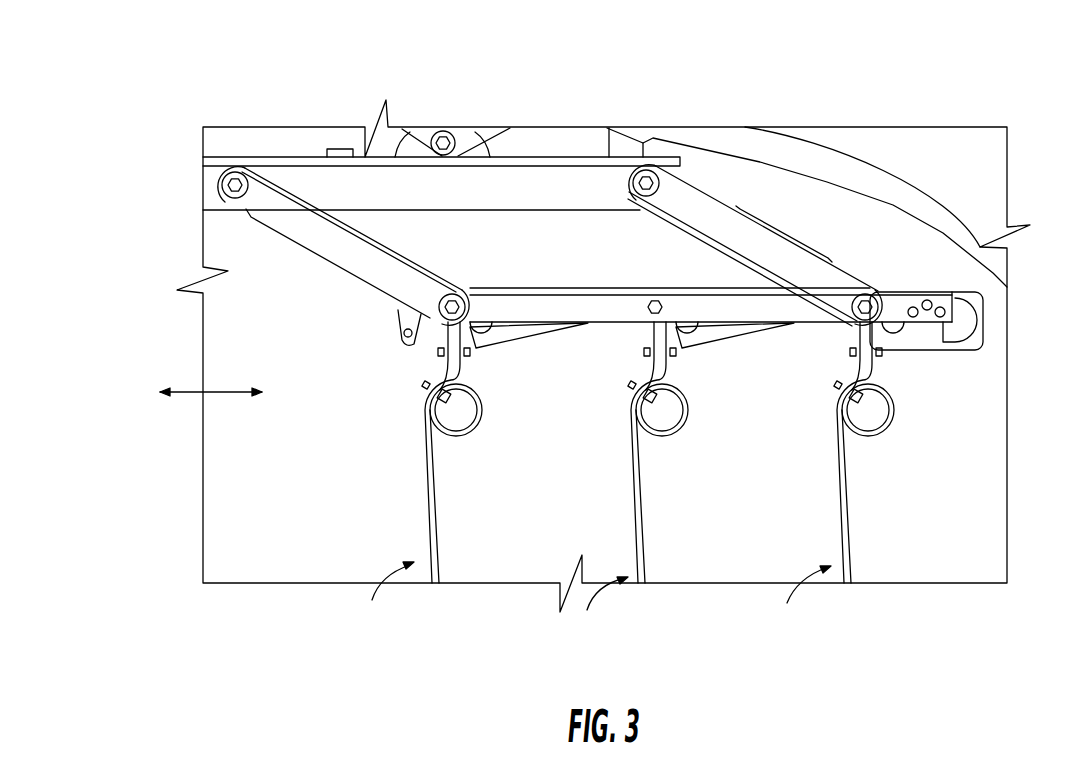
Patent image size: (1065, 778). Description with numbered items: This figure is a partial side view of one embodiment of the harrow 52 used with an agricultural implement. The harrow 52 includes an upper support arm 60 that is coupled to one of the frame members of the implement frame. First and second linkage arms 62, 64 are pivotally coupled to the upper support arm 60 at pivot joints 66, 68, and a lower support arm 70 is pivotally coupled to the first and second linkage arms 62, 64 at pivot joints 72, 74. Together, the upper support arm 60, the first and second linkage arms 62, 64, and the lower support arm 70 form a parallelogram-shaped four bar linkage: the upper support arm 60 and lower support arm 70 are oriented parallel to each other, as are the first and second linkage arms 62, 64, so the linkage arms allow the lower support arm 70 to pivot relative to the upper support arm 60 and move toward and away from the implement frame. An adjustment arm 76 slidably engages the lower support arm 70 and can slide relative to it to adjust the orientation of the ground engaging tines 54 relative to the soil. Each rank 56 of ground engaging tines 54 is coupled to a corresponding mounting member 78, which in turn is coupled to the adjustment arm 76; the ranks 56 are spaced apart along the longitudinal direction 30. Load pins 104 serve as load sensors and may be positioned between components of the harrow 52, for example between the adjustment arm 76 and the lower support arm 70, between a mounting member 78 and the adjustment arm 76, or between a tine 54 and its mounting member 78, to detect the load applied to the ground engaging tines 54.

The longitudinal direction 30 is at (212, 392).
The harrow 52 is at (203, 82).
The ground engaging tines 54 is at (664, 487).
The ranks 56 is at (594, 606).
The upper support arm 60 is at (293, 157).
The first linkage arm 62 is at (336, 260).
The second linkage arm 64 is at (775, 246).
The pivot joint 66 is at (226, 188).
The pivot joint 68 is at (656, 184).
The lower support arm 70 is at (503, 288).
The pivot joint 72 is at (458, 298).
The pivot joint 74 is at (876, 292).
The adjustment arm 76 is at (935, 352).
The mounting member 78 is at (652, 372).
The load pin 104 is at (928, 302).